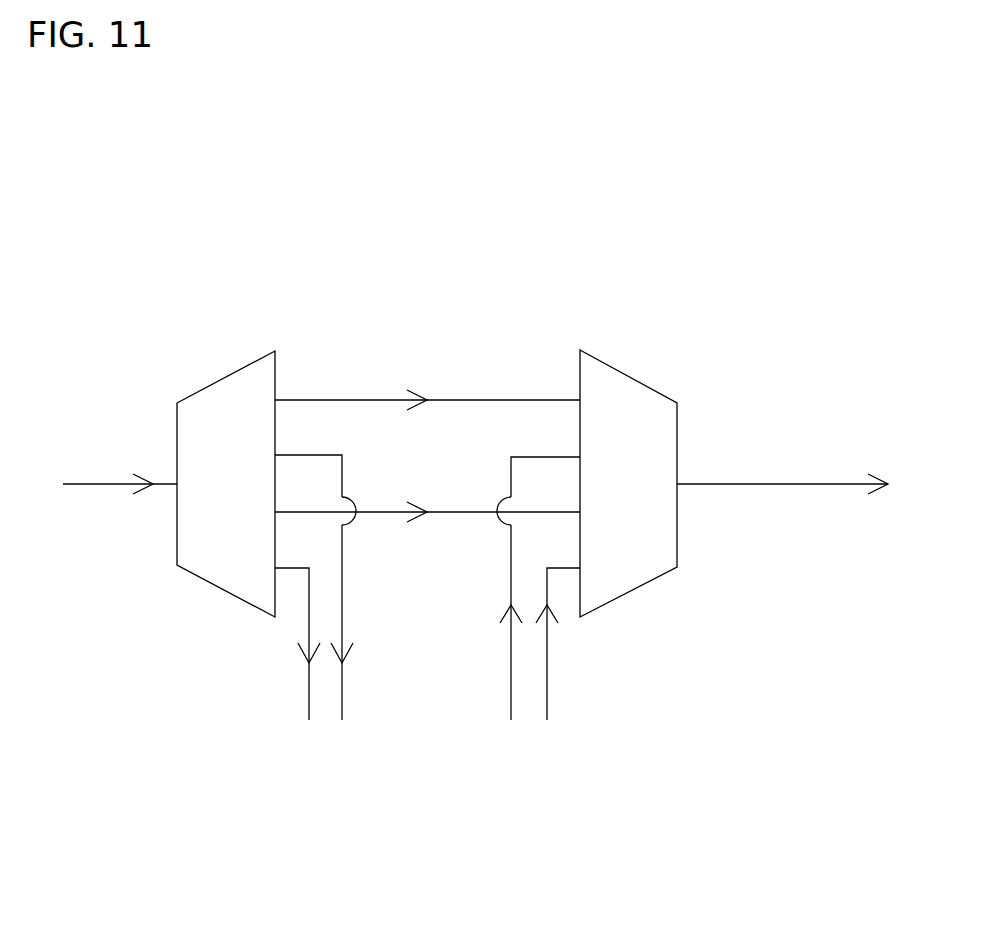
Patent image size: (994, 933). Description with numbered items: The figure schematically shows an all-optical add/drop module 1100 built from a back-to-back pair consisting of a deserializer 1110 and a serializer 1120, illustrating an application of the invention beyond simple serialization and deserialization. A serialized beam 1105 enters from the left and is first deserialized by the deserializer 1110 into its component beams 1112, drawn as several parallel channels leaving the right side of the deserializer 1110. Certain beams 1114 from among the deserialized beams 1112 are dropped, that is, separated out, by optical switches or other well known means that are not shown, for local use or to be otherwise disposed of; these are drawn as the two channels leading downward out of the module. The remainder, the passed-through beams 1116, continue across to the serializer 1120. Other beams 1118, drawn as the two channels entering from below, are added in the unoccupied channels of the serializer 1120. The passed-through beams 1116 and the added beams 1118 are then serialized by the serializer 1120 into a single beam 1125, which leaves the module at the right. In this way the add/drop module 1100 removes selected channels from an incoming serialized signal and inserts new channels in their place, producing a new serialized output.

The add/drop module 1100 is at (770, 705).
The serialized beam 1105 is at (92, 487).
The deserializer 1110 is at (215, 380).
The component beams 1112 is at (300, 568).
The dropped beams 1114 is at (310, 613).
The passed-through beams 1116 is at (480, 512).
The added beams 1118 is at (547, 655).
The serializer 1120 is at (647, 382).
The single beam 1125 is at (830, 485).